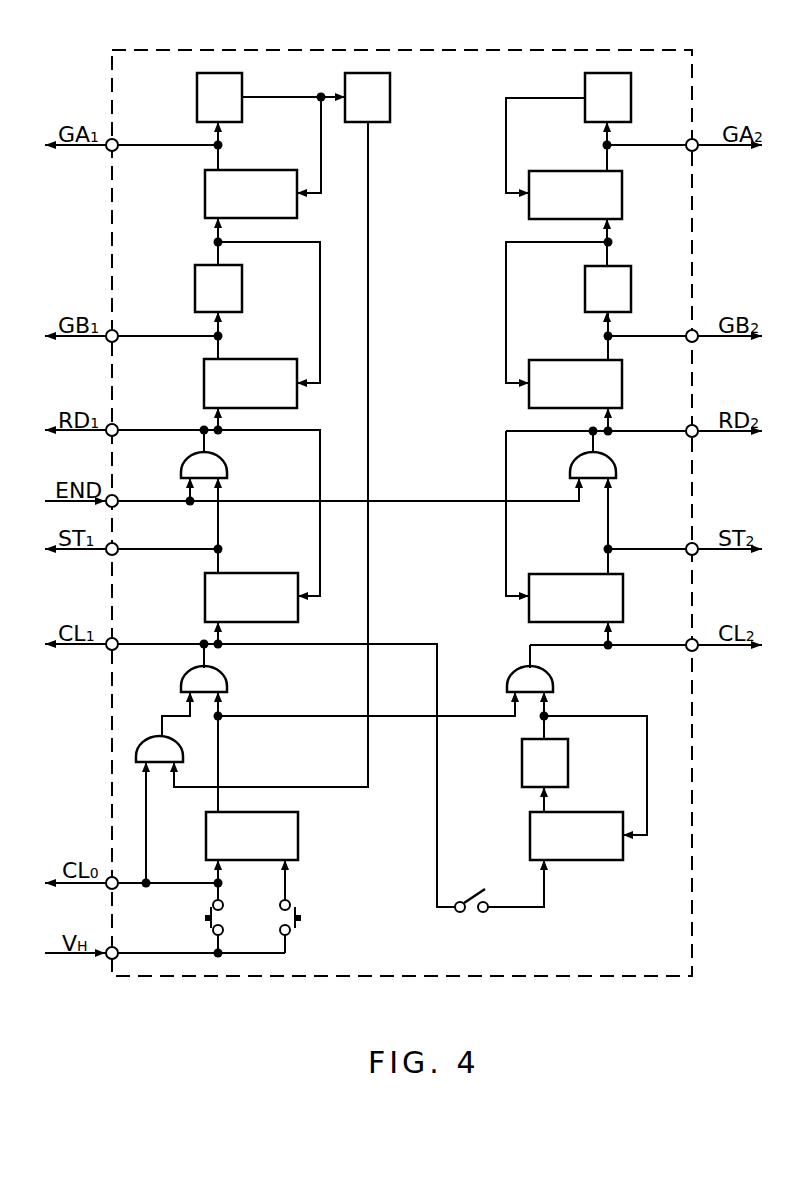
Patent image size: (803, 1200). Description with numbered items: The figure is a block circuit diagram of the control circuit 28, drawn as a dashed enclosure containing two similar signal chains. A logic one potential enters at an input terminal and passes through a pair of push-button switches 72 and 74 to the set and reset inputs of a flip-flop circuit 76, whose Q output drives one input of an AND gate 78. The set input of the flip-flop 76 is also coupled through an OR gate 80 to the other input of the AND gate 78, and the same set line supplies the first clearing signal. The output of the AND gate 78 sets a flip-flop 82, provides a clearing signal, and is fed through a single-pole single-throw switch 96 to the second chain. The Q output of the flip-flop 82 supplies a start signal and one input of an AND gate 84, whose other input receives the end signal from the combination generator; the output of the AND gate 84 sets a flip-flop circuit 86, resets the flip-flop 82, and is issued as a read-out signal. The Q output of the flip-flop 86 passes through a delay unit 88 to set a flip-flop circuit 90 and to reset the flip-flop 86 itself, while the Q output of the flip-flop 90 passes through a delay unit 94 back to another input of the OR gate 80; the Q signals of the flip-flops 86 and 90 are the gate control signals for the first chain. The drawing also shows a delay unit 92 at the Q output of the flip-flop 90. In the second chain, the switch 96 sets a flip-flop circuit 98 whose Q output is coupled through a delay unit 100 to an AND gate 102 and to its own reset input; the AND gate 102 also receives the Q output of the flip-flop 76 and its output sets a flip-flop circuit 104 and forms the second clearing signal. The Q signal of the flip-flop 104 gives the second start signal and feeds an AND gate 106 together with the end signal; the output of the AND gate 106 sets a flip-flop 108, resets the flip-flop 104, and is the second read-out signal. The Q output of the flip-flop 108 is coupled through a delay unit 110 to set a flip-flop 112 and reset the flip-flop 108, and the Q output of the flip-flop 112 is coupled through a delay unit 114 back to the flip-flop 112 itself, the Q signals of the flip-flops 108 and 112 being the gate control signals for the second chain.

The control circuit 28 is at (435, 49).
The push-button switch 72 is at (208, 918).
The push-button switch 74 is at (302, 920).
The flip-flop circuit 76 is at (298, 832).
The AND gate 78 is at (225, 677).
The OR gate 80 is at (176, 745).
The flip-flop 82 is at (205, 598).
The AND gate 84 is at (224, 461).
The flip-flop circuit 86 is at (204, 381).
The delay unit 88 is at (242, 290).
The flip-flop circuit 90 is at (205, 196).
The delay circuit 92 is at (197, 100).
The delay unit 94 is at (390, 98).
The single-pole single-throw switch 96 is at (472, 915).
The flip-flop circuit 98 is at (530, 835).
The delay unit 100 is at (568, 766).
The AND gate 102 is at (553, 683).
The flip-flop circuit 104 is at (623, 600).
The AND gate 106 is at (615, 466).
The flip-flop 108 is at (622, 385).
The delay unit 110 is at (631, 290).
The flip-flop 112 is at (622, 195).
The delay unit 114 is at (631, 98).